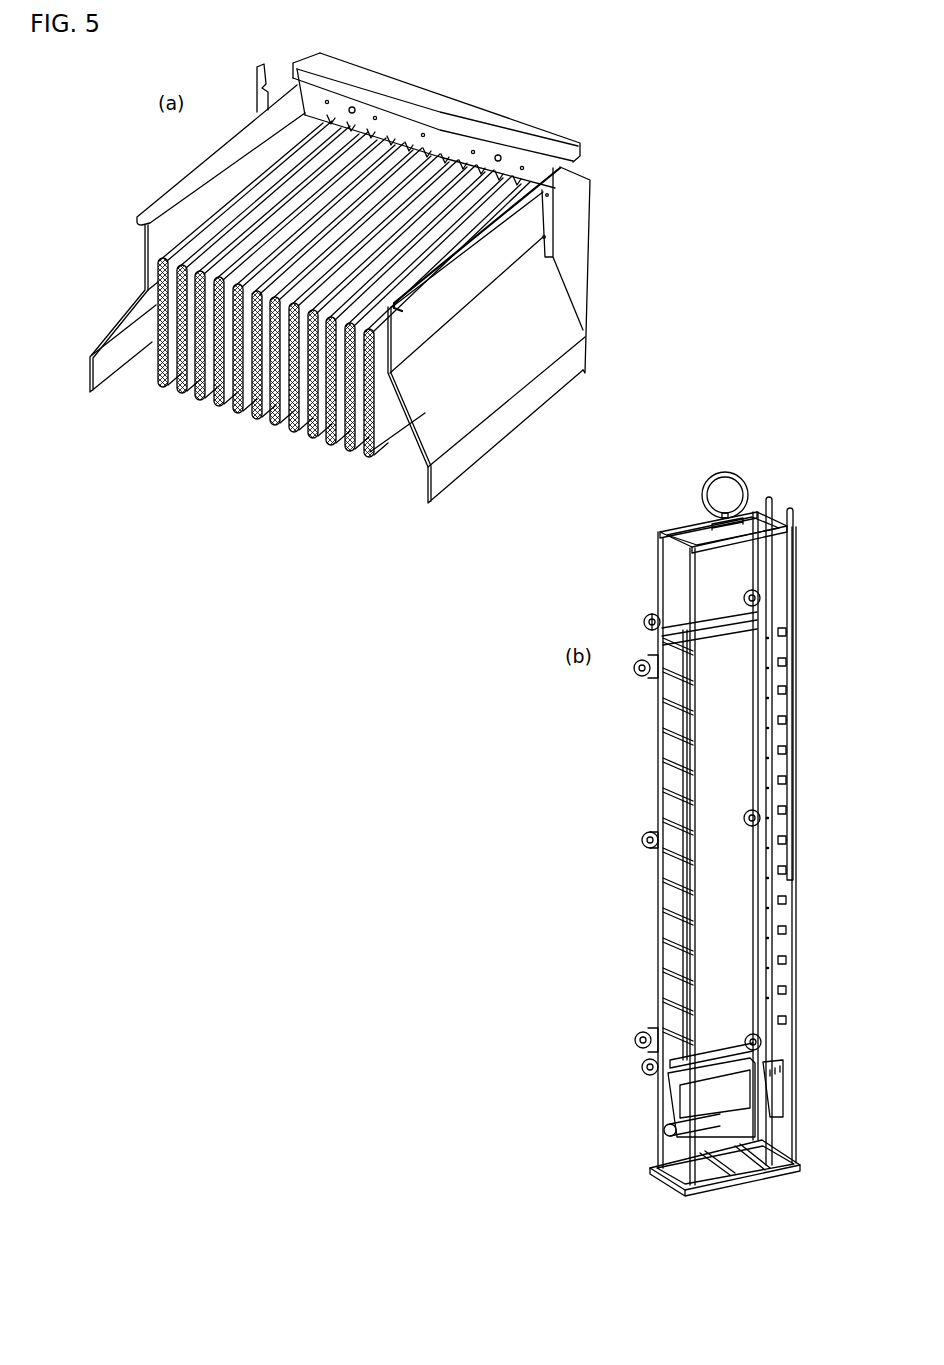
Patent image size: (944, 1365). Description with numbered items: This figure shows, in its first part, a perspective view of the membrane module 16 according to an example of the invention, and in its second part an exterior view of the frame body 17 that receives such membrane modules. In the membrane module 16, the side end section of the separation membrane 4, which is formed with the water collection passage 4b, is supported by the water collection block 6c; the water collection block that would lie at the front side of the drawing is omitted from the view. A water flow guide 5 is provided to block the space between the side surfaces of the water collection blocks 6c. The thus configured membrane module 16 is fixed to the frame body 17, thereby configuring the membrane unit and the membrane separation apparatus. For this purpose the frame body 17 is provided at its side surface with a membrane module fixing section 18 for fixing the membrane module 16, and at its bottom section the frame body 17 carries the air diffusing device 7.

The separation membrane 4 is at (214, 406).
The water collection passage 4b is at (211, 408).
The water flow guide 5 is at (143, 265).
The water collection block 6c is at (548, 140).
The membrane module 16 is at (534, 436).
The frame body 17 is at (614, 871).
The membrane module fixing section 18 is at (668, 668).
The air diffusing device 7 is at (773, 1098).